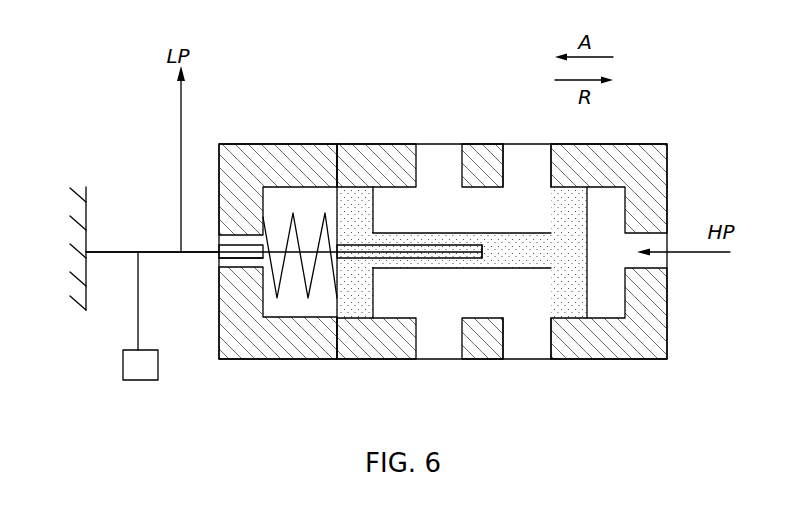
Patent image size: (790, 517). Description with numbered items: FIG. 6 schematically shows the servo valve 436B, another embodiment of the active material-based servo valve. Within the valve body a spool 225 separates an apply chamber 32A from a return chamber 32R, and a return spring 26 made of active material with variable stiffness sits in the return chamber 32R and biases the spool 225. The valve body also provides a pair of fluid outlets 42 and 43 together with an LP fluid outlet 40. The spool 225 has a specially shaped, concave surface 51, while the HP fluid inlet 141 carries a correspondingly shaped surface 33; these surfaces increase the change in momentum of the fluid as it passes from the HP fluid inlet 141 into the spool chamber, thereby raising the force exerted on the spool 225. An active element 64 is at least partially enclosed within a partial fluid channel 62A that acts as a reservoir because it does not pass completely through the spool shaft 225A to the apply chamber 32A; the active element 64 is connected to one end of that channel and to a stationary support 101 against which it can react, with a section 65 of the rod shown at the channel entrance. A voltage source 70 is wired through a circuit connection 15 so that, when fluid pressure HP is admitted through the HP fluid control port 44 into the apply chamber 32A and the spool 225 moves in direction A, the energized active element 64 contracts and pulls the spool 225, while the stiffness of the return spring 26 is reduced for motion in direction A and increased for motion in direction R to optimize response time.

The servo valve 436B is at (690, 114).
The return chamber 32R is at (300, 197).
The return spring 26 is at (305, 278).
The HP fluid inlet 141 is at (345, 165).
The fluid outlet 42 is at (460, 165).
The shaped surface 33 is at (380, 335).
The shaped surface 51 is at (372, 232).
The spool shaft 225A is at (418, 242).
The fluid outlet 43 is at (537, 152).
The apply chamber 32A is at (607, 200).
The spool 225 is at (565, 297).
The HP fluid control port 44 is at (657, 266).
The LP fluid outlet 40 is at (219, 247).
The rod seal 65 is at (219, 258).
The partial fluid channel 62A is at (435, 255).
The active element 64 is at (107, 250).
The fixed support 101 is at (86, 310).
The circuit connection 15 is at (138, 288).
The voltage source 70 is at (158, 357).